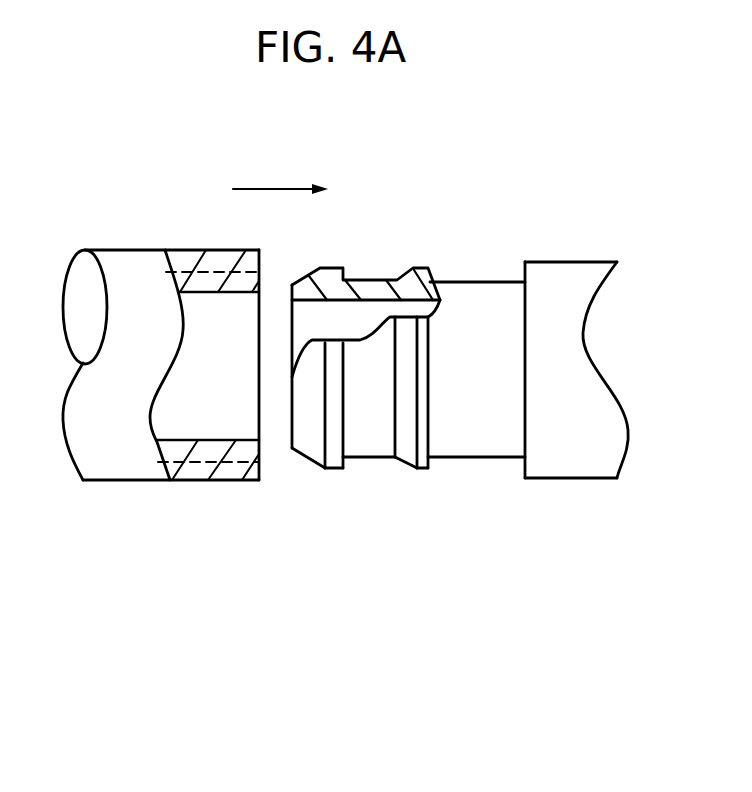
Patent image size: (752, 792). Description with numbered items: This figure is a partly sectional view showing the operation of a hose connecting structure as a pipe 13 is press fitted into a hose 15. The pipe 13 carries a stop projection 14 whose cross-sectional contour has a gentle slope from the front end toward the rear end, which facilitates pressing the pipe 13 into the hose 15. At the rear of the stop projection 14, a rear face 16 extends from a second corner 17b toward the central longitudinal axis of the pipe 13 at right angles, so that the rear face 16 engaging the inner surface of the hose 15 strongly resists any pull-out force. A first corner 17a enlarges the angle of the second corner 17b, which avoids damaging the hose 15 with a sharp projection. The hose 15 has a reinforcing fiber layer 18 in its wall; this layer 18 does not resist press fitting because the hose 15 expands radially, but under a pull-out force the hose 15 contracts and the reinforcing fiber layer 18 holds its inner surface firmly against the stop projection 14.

The pipe 13 is at (363, 278).
The stop projection 14 is at (411, 282).
The hose 15 is at (137, 273).
The rear face 16 is at (431, 282).
The first corner 17a is at (415, 465).
The second corner 17b is at (425, 470).
The reinforcing fiber layer 18 is at (211, 268).